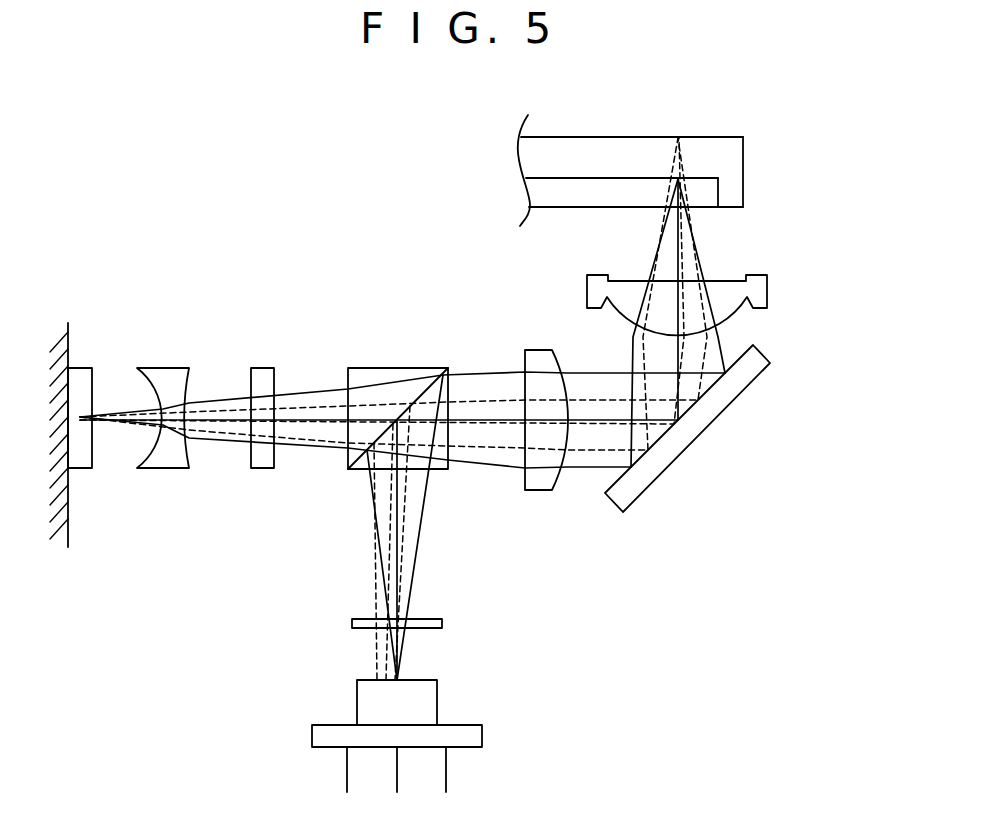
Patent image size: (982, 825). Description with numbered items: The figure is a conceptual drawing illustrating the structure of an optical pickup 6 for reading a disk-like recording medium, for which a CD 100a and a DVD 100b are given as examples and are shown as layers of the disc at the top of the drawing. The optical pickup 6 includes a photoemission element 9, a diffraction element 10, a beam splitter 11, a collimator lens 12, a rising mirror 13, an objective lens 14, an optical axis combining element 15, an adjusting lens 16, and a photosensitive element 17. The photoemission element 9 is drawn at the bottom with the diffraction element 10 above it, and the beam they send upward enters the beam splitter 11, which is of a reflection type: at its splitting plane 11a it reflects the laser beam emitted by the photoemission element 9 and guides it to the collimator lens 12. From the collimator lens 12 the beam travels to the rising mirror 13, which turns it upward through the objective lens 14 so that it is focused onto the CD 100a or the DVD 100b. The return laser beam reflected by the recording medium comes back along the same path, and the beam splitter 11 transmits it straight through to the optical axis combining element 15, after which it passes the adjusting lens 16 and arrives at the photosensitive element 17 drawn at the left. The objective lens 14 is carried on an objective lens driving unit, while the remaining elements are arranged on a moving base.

The optical pickup 6 is at (143, 158).
The photoemission element 9 is at (426, 697).
The diffraction element 10 is at (432, 620).
The beam splitter 11 is at (409, 373).
The splitting plane 11a is at (442, 367).
The collimator lens 12 is at (542, 350).
The rising mirror 13 is at (714, 424).
The objective lens 14 is at (760, 290).
The optical axis combining element 15 is at (268, 367).
The adjusting lens 16 is at (173, 367).
The photosensitive element 17 is at (80, 367).
The CD 100a is at (731, 151).
The DVD 100b is at (707, 193).